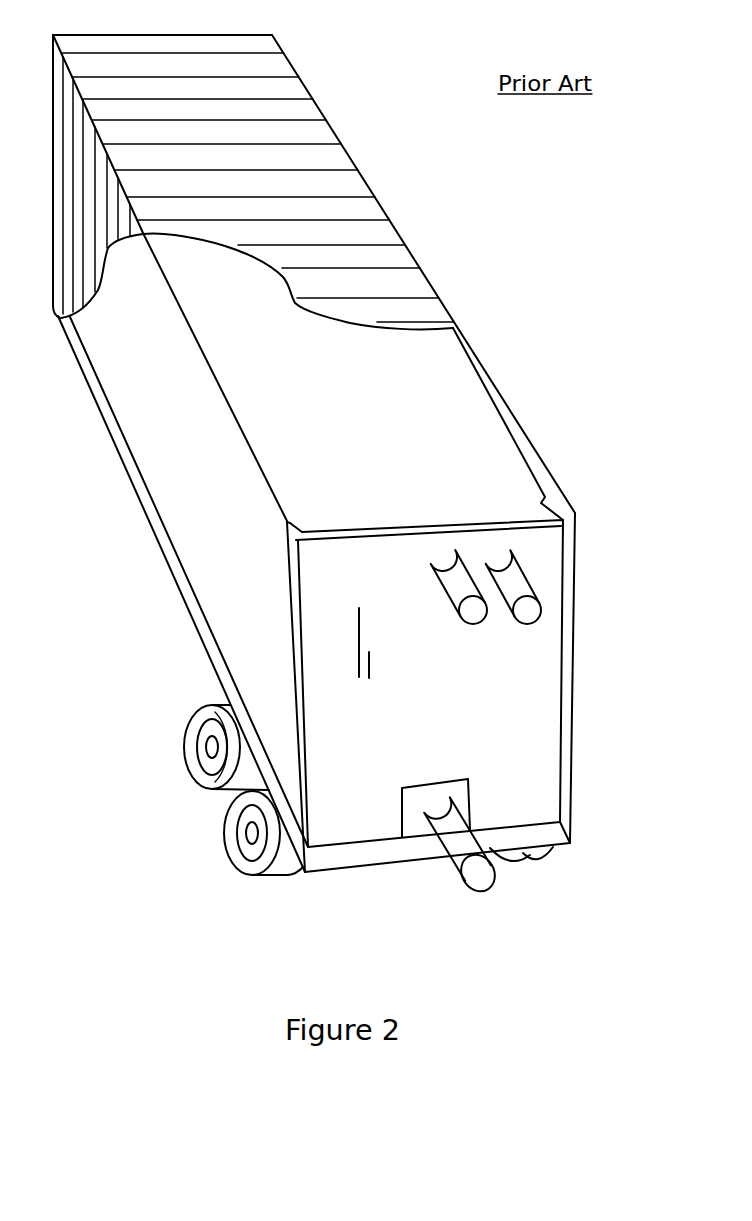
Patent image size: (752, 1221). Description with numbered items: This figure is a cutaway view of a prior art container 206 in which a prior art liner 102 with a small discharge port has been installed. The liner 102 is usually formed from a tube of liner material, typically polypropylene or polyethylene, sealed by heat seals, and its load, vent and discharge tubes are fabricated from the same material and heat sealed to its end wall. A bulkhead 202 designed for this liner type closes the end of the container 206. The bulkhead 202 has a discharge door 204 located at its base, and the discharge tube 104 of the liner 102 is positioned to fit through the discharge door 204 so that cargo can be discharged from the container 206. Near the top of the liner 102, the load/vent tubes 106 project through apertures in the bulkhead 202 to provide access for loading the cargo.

The liner 102 is at (488, 465).
The discharge tube 104 is at (447, 862).
The load/vent tubes 106 is at (527, 625).
The bulkhead 202 is at (538, 765).
The discharge door 204 is at (408, 820).
The container 206 is at (293, 78).